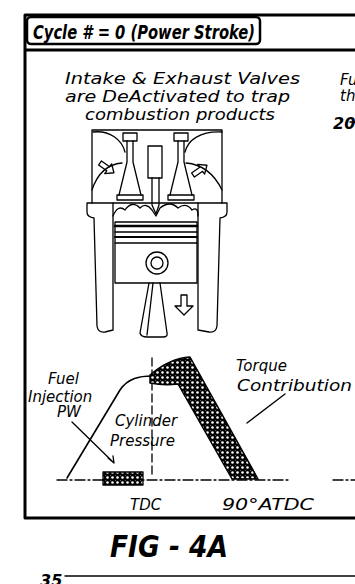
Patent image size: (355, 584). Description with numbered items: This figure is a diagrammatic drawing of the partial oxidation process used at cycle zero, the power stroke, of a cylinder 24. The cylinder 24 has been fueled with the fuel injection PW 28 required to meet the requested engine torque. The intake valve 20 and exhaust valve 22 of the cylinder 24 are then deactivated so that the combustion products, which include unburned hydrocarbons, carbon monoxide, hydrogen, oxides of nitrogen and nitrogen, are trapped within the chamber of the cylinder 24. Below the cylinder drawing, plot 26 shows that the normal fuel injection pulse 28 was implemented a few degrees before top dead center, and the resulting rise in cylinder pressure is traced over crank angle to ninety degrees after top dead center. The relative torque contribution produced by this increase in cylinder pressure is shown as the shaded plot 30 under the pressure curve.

The intake valve 20 is at (93, 131).
The exhaust valve 22 is at (200, 130).
The cylinder 24 is at (223, 213).
The plot 26 is at (226, 359).
The fuel injection pulse width 28 is at (103, 485).
The torque contribution plot 30 is at (250, 443).